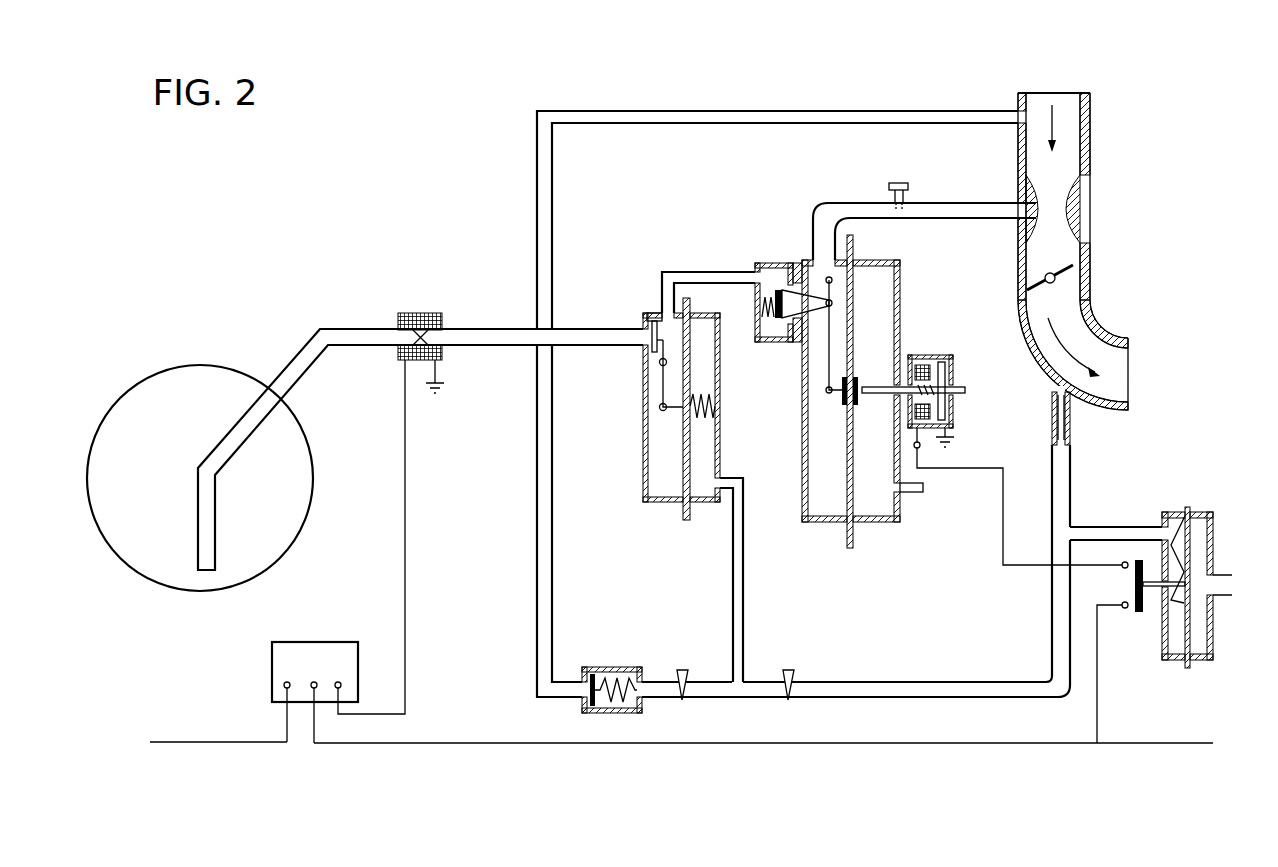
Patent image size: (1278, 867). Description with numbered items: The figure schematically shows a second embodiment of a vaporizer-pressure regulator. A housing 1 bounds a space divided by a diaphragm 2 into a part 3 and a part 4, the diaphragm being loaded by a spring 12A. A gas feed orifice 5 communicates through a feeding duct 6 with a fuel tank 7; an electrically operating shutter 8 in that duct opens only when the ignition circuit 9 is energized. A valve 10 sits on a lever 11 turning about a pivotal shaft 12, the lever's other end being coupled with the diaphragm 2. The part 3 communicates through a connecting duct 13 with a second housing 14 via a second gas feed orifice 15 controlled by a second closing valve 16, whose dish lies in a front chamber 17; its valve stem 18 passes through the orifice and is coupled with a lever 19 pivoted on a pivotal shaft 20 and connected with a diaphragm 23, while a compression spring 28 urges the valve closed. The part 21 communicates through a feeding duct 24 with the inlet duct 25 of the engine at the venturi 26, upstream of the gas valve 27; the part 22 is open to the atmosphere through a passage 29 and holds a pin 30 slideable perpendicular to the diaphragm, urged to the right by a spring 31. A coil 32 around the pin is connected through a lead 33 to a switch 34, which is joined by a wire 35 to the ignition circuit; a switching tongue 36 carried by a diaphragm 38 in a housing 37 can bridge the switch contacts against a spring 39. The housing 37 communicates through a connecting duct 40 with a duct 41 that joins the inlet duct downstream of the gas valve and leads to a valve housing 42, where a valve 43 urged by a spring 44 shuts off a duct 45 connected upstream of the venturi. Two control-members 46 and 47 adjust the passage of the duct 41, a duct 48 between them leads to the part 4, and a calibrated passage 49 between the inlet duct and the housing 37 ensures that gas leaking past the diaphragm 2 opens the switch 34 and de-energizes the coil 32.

The housing 1 is at (644, 492).
The diaphragm 2 is at (688, 470).
The part of space 3 is at (660, 445).
The part of space 4 is at (705, 443).
The gas feed orifice 5 is at (645, 338).
The feeding duct 6 is at (520, 347).
The fuel tank 7 is at (298, 480).
The electrically operating shutter 8 is at (400, 313).
The ignition circuit 9 is at (513, 745).
The valve 10 is at (655, 313).
The lever 11 is at (660, 382).
The pivotal shaft 12 is at (660, 362).
The spring 12A is at (706, 407).
The connecting duct 13 is at (685, 272).
The second housing 14 is at (900, 305).
The second gas feed orifice 15 is at (803, 340).
The second closing valve 16 is at (765, 300).
The front chamber 17 is at (777, 264).
The valve stem 18 is at (835, 318).
The lever 19 is at (826, 378).
The pivotal shaft 20 is at (836, 280).
The part of space 21 is at (813, 503).
The part of space 22 is at (880, 520).
The diaphragm 23 is at (855, 490).
The feeding duct 24 is at (953, 203).
The inlet duct 25 is at (1092, 140).
The venturi 26 is at (1082, 205).
The gas valve 27 is at (1070, 283).
The compression spring 28 is at (758, 318).
The passage 29 is at (924, 490).
The pin 30 is at (873, 387).
The spring 31 is at (932, 395).
The coil 32 is at (930, 360).
The lead 33 is at (1003, 568).
The switch 34 is at (1123, 582).
The wire 35 is at (1097, 690).
The switching tongue 36 is at (1148, 598).
The housing 37 is at (1213, 628).
The diaphragm 38 is at (1206, 571).
The spring 39 is at (1175, 540).
The connecting duct 40 is at (1113, 527).
The duct 41 is at (1073, 463).
The valve housing 42 is at (630, 679).
The valve 43 is at (590, 670).
The spring 44 is at (640, 705).
The duct 45 is at (537, 575).
The control-member 46 is at (800, 668).
The control-member 47 is at (686, 668).
The duct 48 is at (745, 580).
The calibrated passage 49 is at (1075, 415).